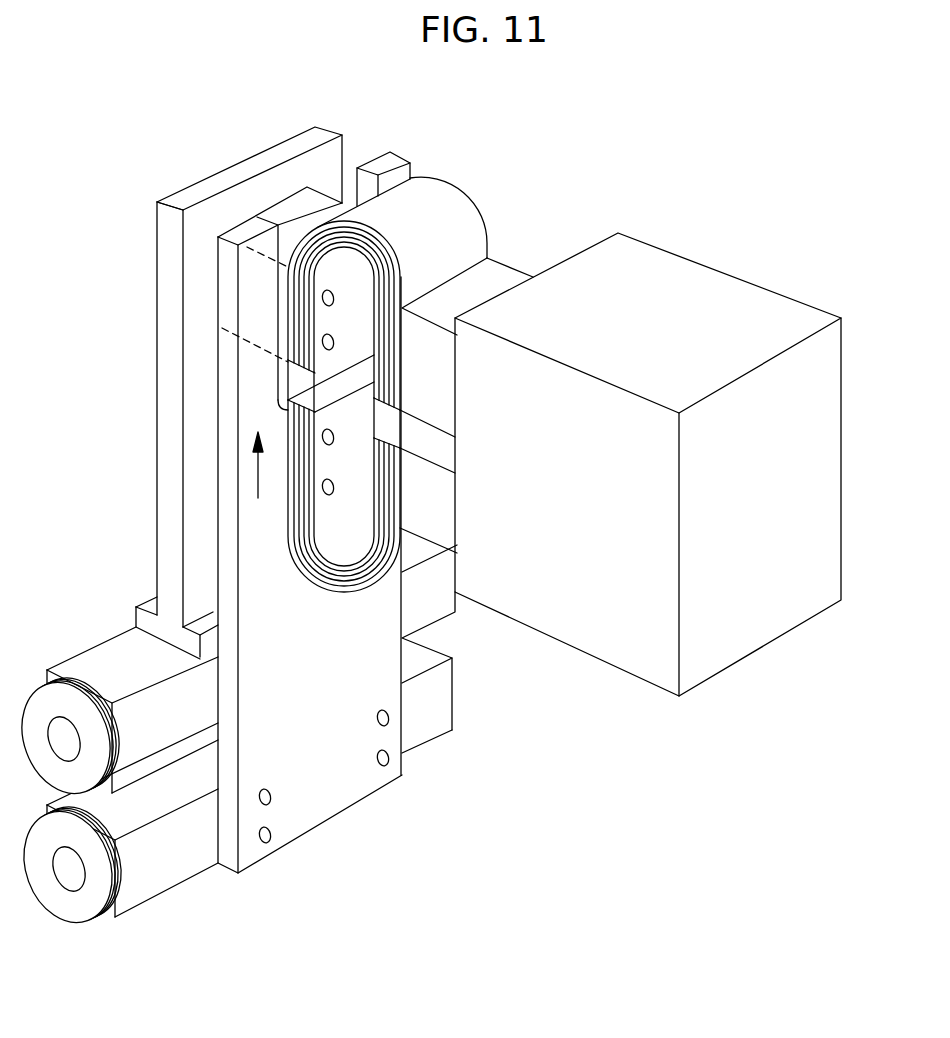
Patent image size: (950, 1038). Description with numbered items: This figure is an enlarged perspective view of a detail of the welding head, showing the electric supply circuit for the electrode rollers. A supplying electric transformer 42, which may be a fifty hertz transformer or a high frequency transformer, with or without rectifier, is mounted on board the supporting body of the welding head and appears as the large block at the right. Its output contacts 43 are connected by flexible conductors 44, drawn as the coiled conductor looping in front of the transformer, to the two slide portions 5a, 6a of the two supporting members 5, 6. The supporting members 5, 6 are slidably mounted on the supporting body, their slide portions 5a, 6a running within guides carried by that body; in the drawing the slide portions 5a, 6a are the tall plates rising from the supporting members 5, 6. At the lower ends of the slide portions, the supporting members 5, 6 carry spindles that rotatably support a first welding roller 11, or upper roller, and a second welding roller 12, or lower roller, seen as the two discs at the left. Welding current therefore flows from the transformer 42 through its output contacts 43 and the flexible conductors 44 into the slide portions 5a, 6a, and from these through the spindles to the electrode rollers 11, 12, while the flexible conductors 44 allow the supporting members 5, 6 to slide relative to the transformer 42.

The supporting member 5 is at (128, 648).
The slide portion 5a is at (172, 388).
The supporting member 6 is at (142, 885).
The slide portion 6a is at (303, 768).
The first welding roller 11 is at (60, 702).
The second welding roller 12 is at (73, 907).
The supplying electric transformer 42 is at (708, 667).
The output contacts 43 is at (440, 392).
The flexible conductors 44 is at (465, 220).